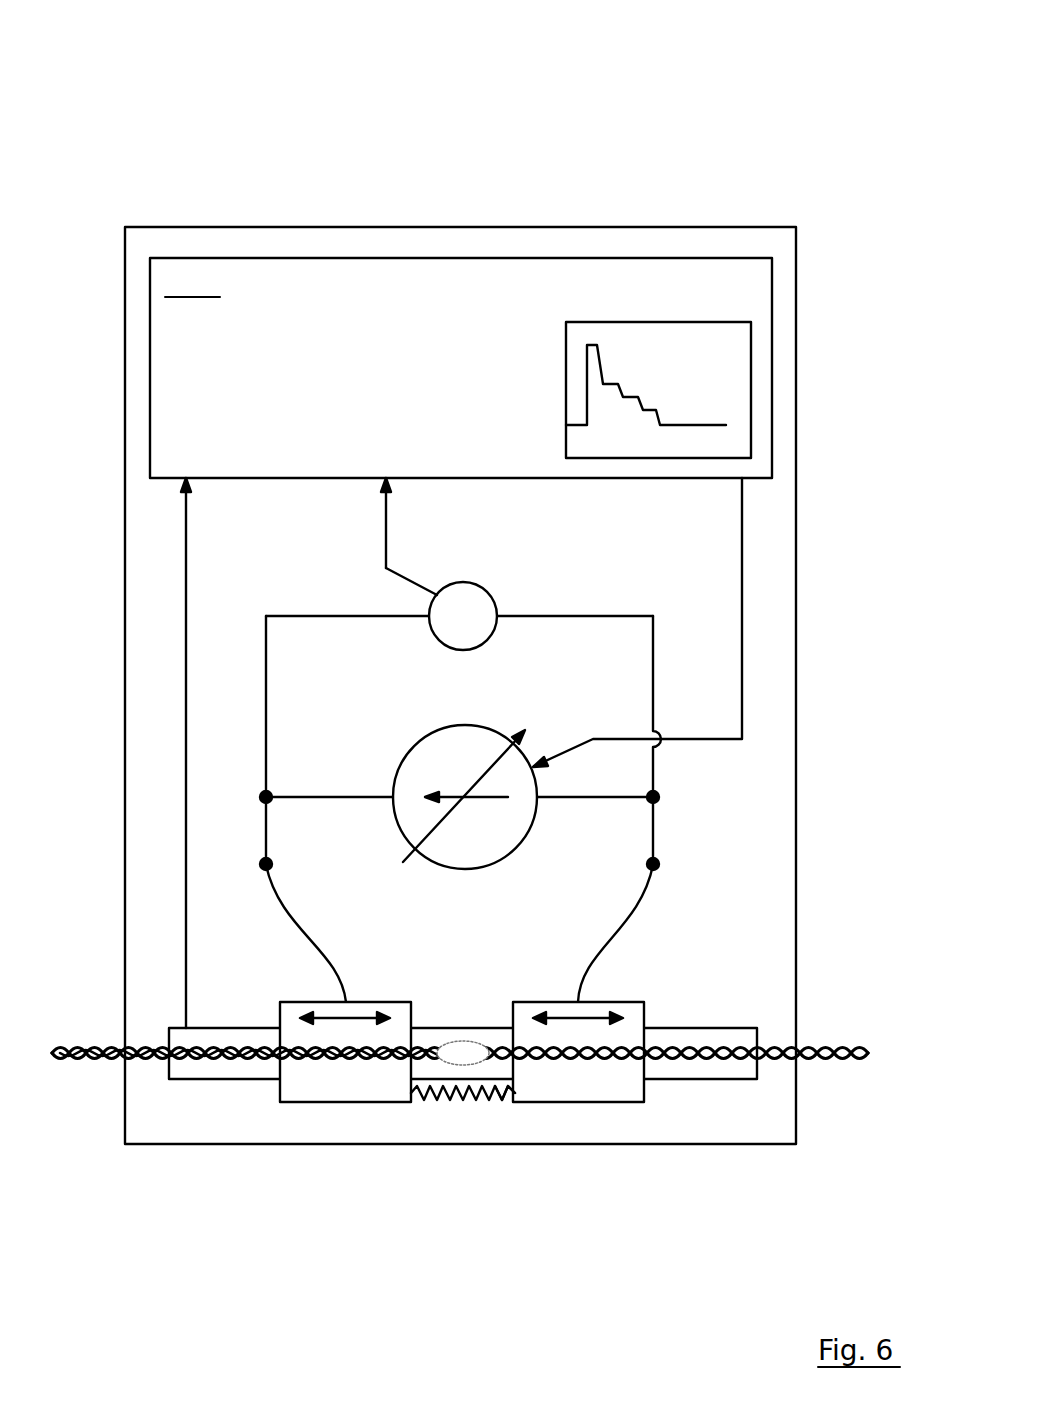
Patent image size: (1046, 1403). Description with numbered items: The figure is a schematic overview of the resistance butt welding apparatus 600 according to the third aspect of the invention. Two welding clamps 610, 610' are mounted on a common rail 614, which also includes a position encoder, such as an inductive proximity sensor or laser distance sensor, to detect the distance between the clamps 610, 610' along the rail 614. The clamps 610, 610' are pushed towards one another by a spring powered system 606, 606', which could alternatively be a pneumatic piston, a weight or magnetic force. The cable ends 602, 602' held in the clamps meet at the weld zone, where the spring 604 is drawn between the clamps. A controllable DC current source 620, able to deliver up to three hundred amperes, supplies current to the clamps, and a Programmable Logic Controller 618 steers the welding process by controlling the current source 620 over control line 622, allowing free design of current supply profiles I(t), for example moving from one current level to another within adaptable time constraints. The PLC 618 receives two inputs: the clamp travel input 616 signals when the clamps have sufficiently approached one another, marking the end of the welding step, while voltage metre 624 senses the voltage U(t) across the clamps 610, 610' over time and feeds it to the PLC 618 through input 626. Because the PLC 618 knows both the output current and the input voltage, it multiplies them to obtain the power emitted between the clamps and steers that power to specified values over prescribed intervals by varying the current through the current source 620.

The resistance butt welding apparatus 600 is at (183, 141).
The first cable end 602 is at (248, 1029).
The second cable end 602' is at (679, 1029).
The spring 604 is at (491, 1150).
The spring powered system 606 is at (507, 1163).
The spring powered system 606' is at (623, 1185).
The welding clamp 610 is at (360, 1108).
The welding clamp 610' is at (633, 1108).
The common rail 614 is at (411, 1121).
The clamp travel input 616 is at (186, 614).
The Programmable Logic Controller (PLC) 618 is at (485, 375).
The controllable DC current source 620 is at (508, 846).
The control line 622 is at (742, 614).
The voltage metre 624 is at (523, 599).
The input 626 is at (348, 536).